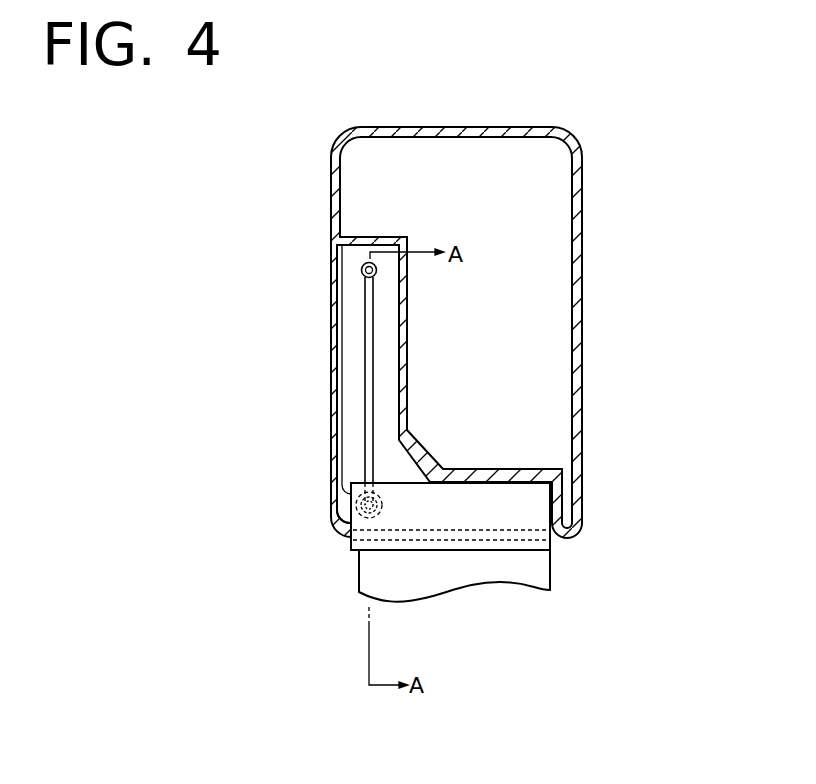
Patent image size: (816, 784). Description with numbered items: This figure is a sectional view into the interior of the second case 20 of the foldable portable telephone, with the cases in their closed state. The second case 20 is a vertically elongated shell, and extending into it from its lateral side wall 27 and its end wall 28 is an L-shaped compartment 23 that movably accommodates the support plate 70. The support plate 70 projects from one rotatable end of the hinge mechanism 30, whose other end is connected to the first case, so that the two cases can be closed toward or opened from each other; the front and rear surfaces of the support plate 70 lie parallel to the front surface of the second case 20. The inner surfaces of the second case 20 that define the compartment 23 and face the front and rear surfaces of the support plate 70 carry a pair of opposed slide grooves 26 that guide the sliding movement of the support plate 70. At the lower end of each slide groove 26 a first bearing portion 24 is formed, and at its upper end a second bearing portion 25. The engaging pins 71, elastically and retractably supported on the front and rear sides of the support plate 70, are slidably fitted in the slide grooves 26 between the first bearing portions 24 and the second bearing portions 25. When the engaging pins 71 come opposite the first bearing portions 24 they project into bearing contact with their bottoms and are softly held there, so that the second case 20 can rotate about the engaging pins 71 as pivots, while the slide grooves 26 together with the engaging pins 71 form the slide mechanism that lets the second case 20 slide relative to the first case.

The second case 20 is at (582, 182).
The L-shaped compartment 23 is at (350, 260).
The first bearing portion 24 is at (349, 499).
The second bearing portion 25 is at (358, 270).
The slide groove 26 is at (362, 380).
The lateral side wall 27 is at (332, 317).
The end wall 28 is at (510, 543).
The hinge mechanism 30 is at (540, 585).
The support plate 70 is at (420, 492).
The engaging pin 71 is at (340, 533).